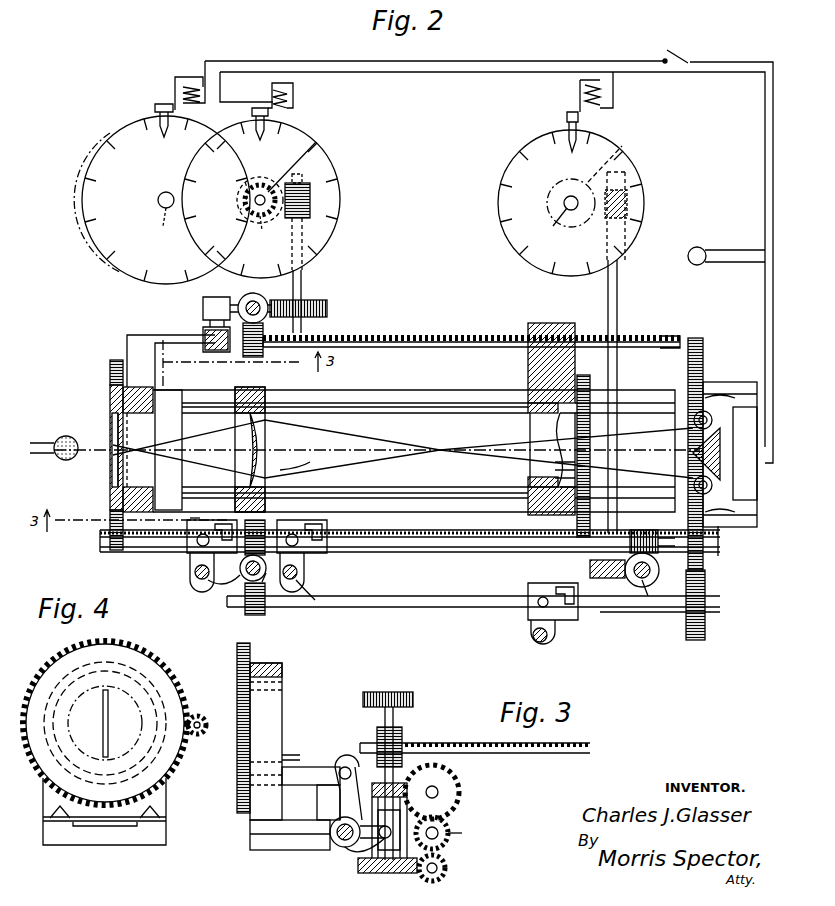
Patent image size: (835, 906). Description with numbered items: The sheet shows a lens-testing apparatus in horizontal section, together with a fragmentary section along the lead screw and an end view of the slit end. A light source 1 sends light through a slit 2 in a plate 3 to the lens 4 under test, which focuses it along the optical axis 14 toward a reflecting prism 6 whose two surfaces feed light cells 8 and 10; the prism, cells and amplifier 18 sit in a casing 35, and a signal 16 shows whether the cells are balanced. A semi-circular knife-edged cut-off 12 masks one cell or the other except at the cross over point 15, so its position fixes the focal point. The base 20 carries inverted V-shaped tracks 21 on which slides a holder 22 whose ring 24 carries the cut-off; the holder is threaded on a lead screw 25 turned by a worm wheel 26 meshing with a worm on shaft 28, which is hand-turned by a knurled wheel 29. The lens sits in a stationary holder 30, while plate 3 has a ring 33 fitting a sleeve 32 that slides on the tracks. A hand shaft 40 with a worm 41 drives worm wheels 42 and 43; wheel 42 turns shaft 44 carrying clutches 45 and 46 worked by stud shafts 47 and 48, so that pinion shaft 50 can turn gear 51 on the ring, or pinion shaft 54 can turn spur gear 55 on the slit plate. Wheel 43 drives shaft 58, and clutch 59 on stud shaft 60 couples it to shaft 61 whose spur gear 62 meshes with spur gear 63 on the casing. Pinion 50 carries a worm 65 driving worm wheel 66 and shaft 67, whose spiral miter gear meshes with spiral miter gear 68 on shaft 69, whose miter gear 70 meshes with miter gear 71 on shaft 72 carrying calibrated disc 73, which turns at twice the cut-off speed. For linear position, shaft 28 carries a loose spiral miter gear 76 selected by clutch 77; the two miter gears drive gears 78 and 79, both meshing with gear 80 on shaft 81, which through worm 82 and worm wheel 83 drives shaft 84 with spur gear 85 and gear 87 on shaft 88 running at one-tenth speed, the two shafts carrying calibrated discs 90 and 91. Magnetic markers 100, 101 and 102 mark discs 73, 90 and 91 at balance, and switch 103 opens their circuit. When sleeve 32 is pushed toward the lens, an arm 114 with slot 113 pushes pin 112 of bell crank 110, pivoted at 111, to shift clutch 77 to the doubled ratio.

In FIG. 2, the light source 1 is at (56, 440).
In FIG. 2, the slit 2 is at (120, 450).
In FIG. 4, the slit 2 is at (103, 716).
In FIG. 2, the plate 3 is at (113, 470).
In FIG. 4, the plate 3 is at (105, 723).
In FIG. 2, the lens 4 is at (262, 455).
In FIG. 2, the reflecting prism 6 is at (722, 470).
In FIG. 2, the electric light responsive cell 8 is at (708, 412).
In FIG. 2, the electric light responsive cell 10 is at (706, 494).
In FIG. 2, the cut-off 12 is at (528, 440).
In FIG. 2, the optical axis 14 is at (342, 452).
In FIG. 3, the cross over point 15 is at (410, 770).
In FIG. 2, the signal 16 is at (705, 250).
In FIG. 2, the amplifier 18 is at (745, 515).
In FIG. 2, the base 20 is at (385, 392).
In FIG. 4, the base 20 is at (112, 845).
In FIG. 3, the base 20 is at (250, 838).
In FIG. 2, the tracks 21 is at (430, 508).
In FIG. 4, the tracks 21 is at (166, 818).
In FIG. 3, the tracks 21 is at (322, 812).
In FIG. 2, the holder 22 is at (528, 375).
In FIG. 2, the ring 24 is at (528, 490).
In FIG. 2, the lead screw 25 is at (425, 338).
In FIG. 2, the worm wheel 26 is at (255, 349).
In FIG. 3, the worm wheel 26 is at (380, 730).
In FIG. 2, the shaft 28 is at (242, 300).
In FIG. 3, the shaft 28 is at (396, 718).
In FIG. 3, the knurled wheel 29 is at (395, 692).
In FIG. 2, the holder 30 is at (301, 460).
In FIG. 2, the sleeve 32 is at (134, 386).
In FIG. 4, the sleeve 32 is at (170, 697).
In FIG. 3, the sleeve 32 is at (284, 668).
In FIG. 2, the ring 33 is at (110, 410).
In FIG. 2, the casing 35 is at (757, 508).
In FIG. 2, the rotatable shaft 40 is at (242, 578).
In FIG. 2, the worm 41 is at (270, 586).
In FIG. 2, the worm wheel 42 is at (268, 520).
In FIG. 2, the worm wheel 43 is at (255, 616).
In FIG. 2, the shaft 44 is at (208, 580).
In FIG. 2, the clutch 45 is at (308, 565).
In FIG. 2, the clutch 46 is at (190, 521).
In FIG. 2, the stud shaft 47 is at (300, 585).
In FIG. 2, the stud shaft 48 is at (195, 572).
In FIG. 2, the pinion shaft 50 is at (500, 548).
In FIG. 2, the gear 51 is at (592, 387).
In FIG. 2, the pinion shaft 54 is at (122, 540).
In FIG. 4, the pinion shaft 54 is at (200, 735).
In FIG. 2, the spur gear 55 is at (108, 364).
In FIG. 4, the spur gear 55 is at (172, 680).
In FIG. 3, the spur gear 55 is at (237, 655).
In FIG. 2, the shaft 58 is at (410, 608).
In FIG. 2, the clutch 59 is at (565, 624).
In FIG. 2, the stud shaft 60 is at (550, 640).
In FIG. 2, the shaft 61 is at (642, 612).
In FIG. 2, the spur gear 62 is at (706, 624).
In FIG. 2, the spur gear 63 is at (705, 562).
In FIG. 2, the worm 65 is at (652, 532).
In FIG. 2, the worm wheel 66 is at (656, 578).
In FIG. 2, the shaft 67 is at (645, 600).
In FIG. 2, the spiral miter gear 68 is at (590, 567).
In FIG. 2, the shaft 69 is at (618, 297).
In FIG. 2, the miter gear 70 is at (628, 200).
In FIG. 2, the miter gear 71 is at (624, 160).
In FIG. 2, the shaft 72 is at (559, 219).
In FIG. 2, the calibrated disc 73 is at (522, 152).
In FIG. 2, the spiral miter gear 76 is at (328, 309).
In FIG. 3, the spiral miter gear 76 is at (358, 864).
In FIG. 3, the clutch 77 is at (402, 825).
In FIG. 3, the gear 78 is at (455, 795).
In FIG. 3, the gear 79 is at (447, 868).
In FIG. 3, the gear 80 is at (450, 840).
In FIG. 2, the shaft 81 is at (303, 278).
In FIG. 3, the shaft 81 is at (440, 830).
In FIG. 2, the worm 82 is at (326, 163).
In FIG. 2, the worm wheel 83 is at (261, 132).
In FIG. 2, the shaft 84 is at (300, 159).
In FIG. 2, the spur gear 85 is at (266, 232).
In FIG. 2, the gear 87 is at (240, 193).
In FIG. 2, the shaft 88 is at (163, 216).
In FIG. 2, the calibrated disc 90 is at (312, 191).
In FIG. 2, the calibrated disc 91 is at (96, 160).
In FIG. 2, the marker 100 is at (580, 98).
In FIG. 2, the marker 101 is at (295, 97).
In FIG. 2, the marker 102 is at (175, 80).
In FIG. 2, the switch 103 is at (680, 55).
In FIG. 3, the bell crank 110 is at (355, 845).
In FIG. 3, the pivot 111 is at (330, 840).
In FIG. 3, the pin 112 is at (345, 766).
In FIG. 3, the slot 113 is at (306, 767).
In FIG. 2, the arm 114 is at (160, 340).
In FIG. 3, the arm 114 is at (290, 755).